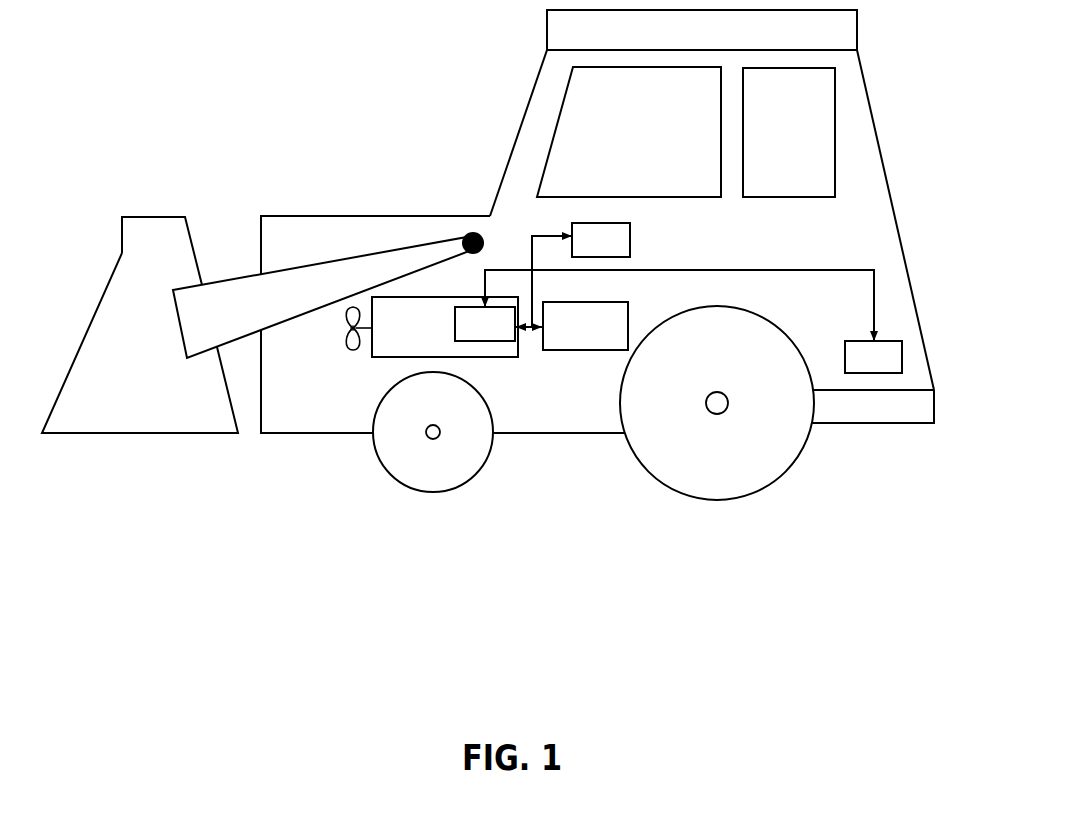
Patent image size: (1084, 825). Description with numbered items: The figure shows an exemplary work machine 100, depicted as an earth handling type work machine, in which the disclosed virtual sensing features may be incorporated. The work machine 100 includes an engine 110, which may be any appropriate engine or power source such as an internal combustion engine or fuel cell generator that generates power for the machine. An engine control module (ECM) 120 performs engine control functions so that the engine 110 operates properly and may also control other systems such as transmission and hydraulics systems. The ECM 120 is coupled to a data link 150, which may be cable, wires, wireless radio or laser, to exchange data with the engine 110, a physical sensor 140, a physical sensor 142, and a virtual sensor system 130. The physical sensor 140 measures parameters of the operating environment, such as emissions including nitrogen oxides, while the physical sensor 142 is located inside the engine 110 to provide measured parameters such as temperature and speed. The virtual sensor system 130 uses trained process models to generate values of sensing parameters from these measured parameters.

The work machine 100 is at (840, 93).
The engine 110 is at (392, 336).
The engine control module (ECM) 120 is at (564, 337).
The virtual sensor system 130 is at (580, 251).
The physical sensor 140 is at (852, 369).
The physical sensor 142 is at (464, 336).
The data link 150 is at (697, 270).